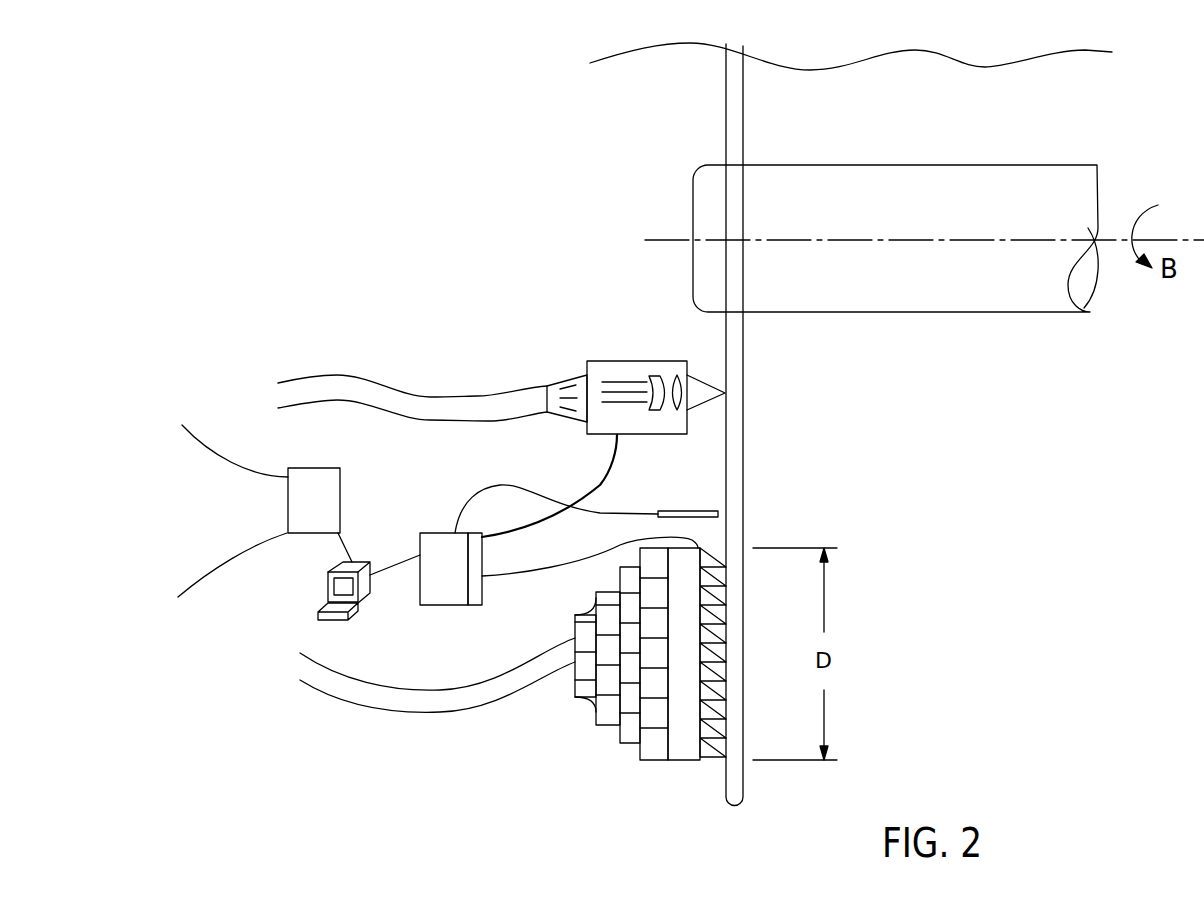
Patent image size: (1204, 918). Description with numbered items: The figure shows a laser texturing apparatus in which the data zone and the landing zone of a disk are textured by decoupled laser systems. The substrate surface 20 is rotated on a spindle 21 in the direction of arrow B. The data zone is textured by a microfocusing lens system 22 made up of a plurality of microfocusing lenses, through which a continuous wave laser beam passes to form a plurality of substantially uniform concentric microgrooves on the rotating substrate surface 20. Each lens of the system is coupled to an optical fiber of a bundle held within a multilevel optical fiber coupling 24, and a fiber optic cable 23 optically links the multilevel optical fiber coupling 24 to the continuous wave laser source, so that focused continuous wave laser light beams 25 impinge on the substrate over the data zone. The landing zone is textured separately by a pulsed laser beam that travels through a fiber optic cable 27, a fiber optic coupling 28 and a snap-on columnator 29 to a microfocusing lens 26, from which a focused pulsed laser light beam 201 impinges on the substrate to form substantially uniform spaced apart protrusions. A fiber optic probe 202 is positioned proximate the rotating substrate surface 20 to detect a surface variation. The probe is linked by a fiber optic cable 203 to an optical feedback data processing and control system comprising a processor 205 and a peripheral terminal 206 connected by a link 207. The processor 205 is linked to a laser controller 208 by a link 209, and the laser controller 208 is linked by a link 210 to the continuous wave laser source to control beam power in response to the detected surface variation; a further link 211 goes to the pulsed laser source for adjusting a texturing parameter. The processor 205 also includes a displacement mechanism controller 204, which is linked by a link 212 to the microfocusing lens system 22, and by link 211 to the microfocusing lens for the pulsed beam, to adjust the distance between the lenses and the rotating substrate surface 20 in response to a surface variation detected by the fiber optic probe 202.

The substrate surface 20 is at (725, 92).
The spindle 21 is at (1015, 313).
The microfocusing lens system 22 is at (680, 762).
The fiber optic cable 23 is at (432, 715).
The multilevel optical fiber coupling 24 is at (622, 745).
The focused continuous wave laser light beams 25 is at (718, 762).
The microfocusing lens 26 is at (675, 378).
The fiber optic cable 27 is at (460, 422).
The fiber optic coupling 28 is at (570, 418).
The snap-on columnator 29 is at (645, 435).
The focused pulsed laser light beam 201 is at (702, 405).
The fiber optic probe 202 is at (710, 512).
The fiber optic cable 203 is at (603, 513).
The displacement mechanism controller 204 is at (477, 607).
The processor 205 is at (442, 605).
The peripheral terminal 206 is at (343, 620).
The link 207 is at (397, 563).
The laser controller 208 is at (340, 483).
The link 209 is at (342, 543).
The link 210 is at (240, 553).
The link 211 is at (532, 520).
The link 212 is at (555, 570).